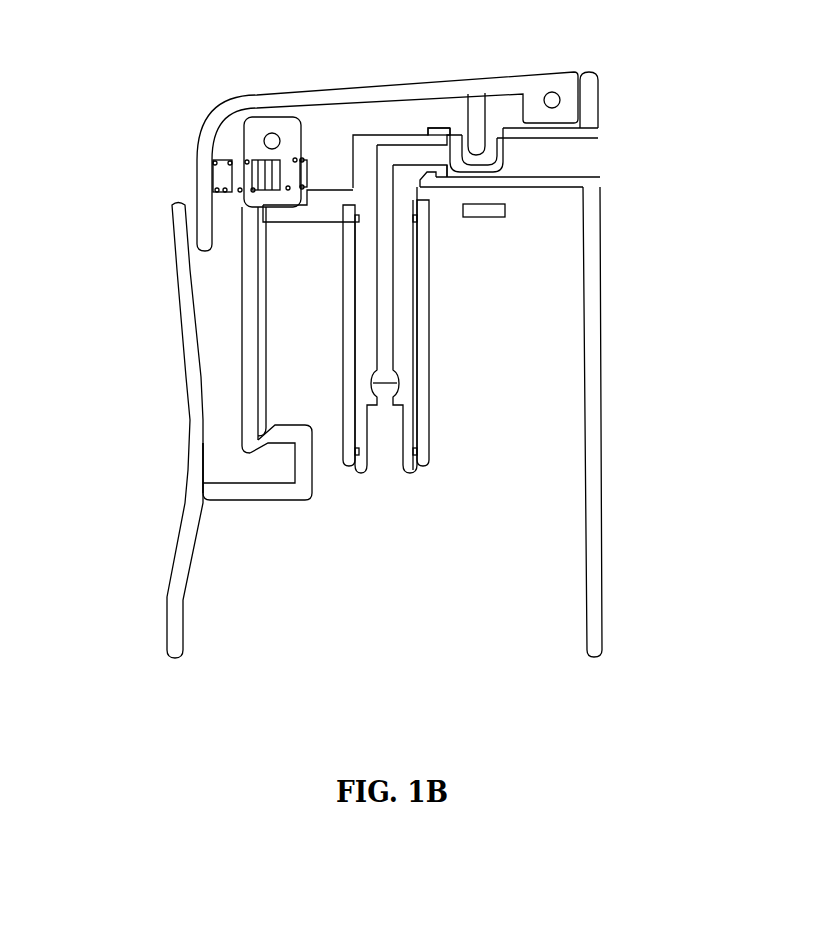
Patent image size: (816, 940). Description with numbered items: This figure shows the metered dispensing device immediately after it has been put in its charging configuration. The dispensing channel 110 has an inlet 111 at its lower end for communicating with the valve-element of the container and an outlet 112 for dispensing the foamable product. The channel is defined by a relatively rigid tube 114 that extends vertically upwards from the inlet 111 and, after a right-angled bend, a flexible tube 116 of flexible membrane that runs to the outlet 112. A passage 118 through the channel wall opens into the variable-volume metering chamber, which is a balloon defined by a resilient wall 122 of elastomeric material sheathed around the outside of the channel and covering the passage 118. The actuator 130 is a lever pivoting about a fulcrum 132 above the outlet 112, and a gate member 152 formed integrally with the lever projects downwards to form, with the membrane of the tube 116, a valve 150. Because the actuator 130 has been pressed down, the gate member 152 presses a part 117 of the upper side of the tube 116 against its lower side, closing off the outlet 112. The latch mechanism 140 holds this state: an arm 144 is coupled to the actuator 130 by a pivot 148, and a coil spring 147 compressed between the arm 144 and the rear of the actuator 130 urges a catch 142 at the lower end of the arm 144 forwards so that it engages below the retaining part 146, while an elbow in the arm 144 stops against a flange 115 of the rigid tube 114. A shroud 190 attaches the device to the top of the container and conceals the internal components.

The dispensing channel 110 is at (415, 158).
The inlet 111 is at (383, 462).
The outlet 112 is at (593, 163).
The rigid tube 114 is at (413, 355).
The flange 115 is at (270, 215).
The flexible tube 116 is at (512, 186).
The part of the upper side of the flexible tube 117 is at (470, 212).
The passage 118 is at (393, 388).
The resilient wall 122 is at (427, 318).
The actuator 130 is at (320, 93).
The fulcrum 132 is at (556, 94).
The latch mechanism 140 is at (250, 378).
The catch 142 is at (258, 427).
The arm 144 is at (250, 270).
The retaining part 146 is at (288, 435).
The spring 147 is at (243, 167).
The pivot 148 is at (268, 134).
The valve 150 is at (467, 202).
The gate member 152 is at (478, 130).
The shroud 190 is at (594, 502).